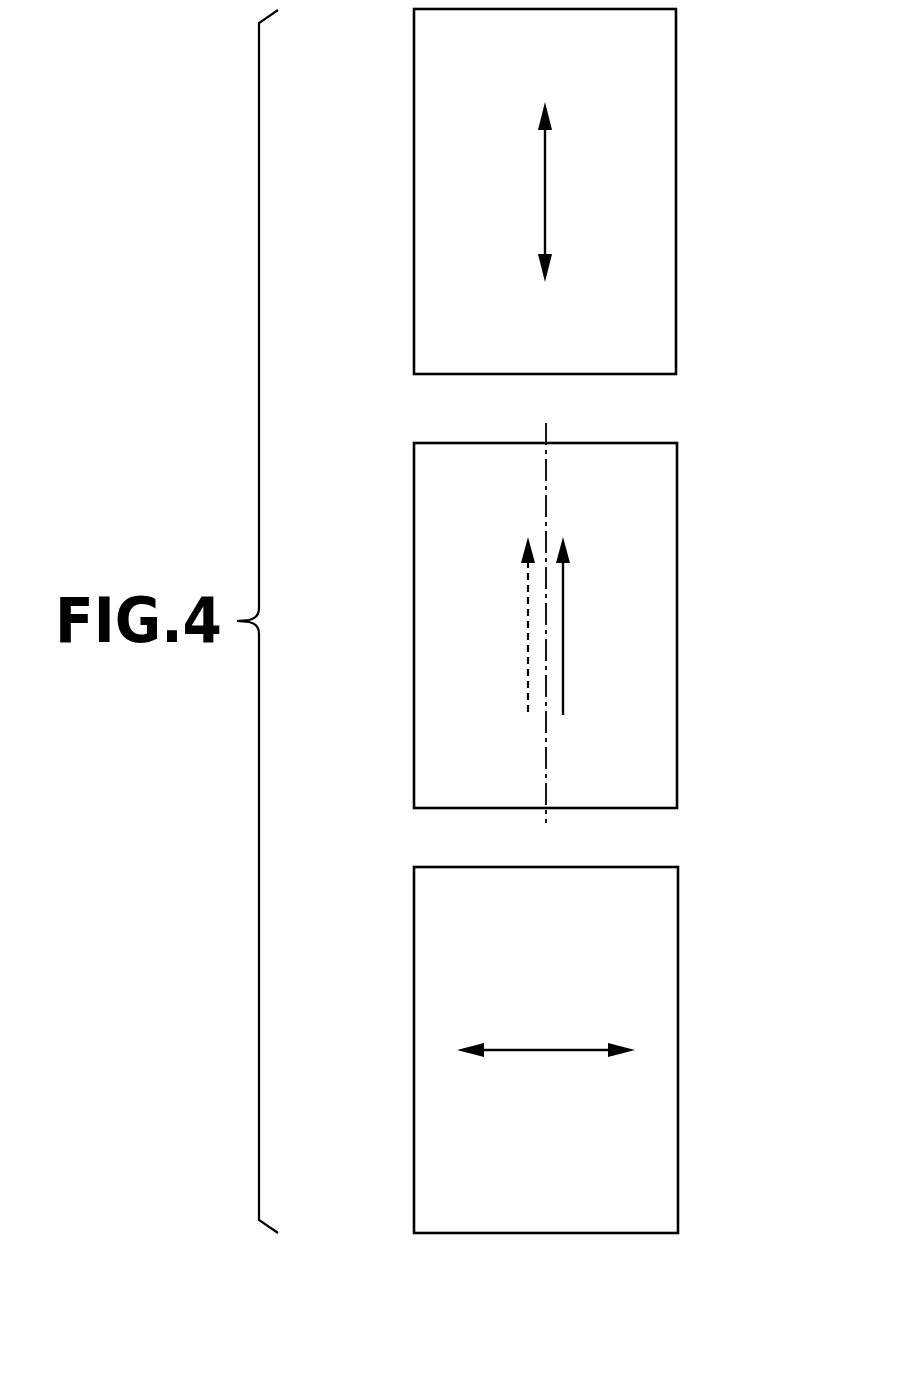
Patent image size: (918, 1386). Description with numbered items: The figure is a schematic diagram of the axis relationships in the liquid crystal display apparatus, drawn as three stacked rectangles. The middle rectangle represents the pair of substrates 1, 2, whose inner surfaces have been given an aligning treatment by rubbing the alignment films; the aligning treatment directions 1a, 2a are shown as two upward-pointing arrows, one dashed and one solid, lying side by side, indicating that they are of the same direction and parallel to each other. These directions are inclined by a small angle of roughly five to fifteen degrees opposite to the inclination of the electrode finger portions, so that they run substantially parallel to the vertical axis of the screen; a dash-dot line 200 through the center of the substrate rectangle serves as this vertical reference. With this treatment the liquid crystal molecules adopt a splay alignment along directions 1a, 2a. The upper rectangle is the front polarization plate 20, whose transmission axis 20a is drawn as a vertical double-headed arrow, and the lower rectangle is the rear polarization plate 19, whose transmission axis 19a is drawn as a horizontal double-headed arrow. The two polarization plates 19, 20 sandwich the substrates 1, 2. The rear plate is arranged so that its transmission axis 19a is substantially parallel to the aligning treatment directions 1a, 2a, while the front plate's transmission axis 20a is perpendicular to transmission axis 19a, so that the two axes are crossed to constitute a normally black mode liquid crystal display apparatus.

The front polarization plate 20 is at (677, 228).
The transmission axis of front polarization plate 20a is at (545, 193).
The substrate 1 is at (611, 625).
The substrate 2 is at (677, 577).
The reference line 200 is at (546, 490).
The aligning treatment direction 1a is at (528, 622).
The aligning treatment direction 2a is at (563, 637).
The rear polarization plate 19 is at (678, 1025).
The transmission axis of rear polarization plate 19a is at (547, 1050).